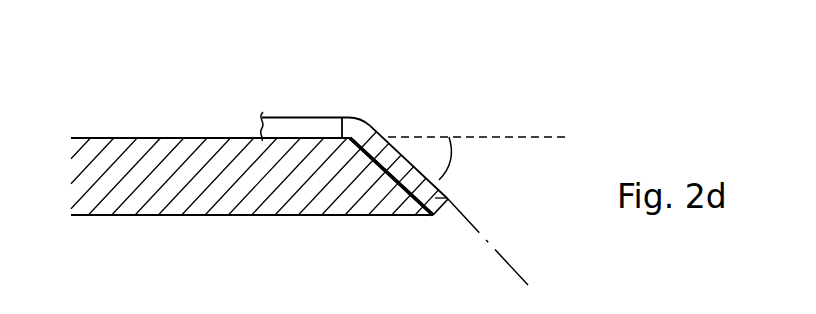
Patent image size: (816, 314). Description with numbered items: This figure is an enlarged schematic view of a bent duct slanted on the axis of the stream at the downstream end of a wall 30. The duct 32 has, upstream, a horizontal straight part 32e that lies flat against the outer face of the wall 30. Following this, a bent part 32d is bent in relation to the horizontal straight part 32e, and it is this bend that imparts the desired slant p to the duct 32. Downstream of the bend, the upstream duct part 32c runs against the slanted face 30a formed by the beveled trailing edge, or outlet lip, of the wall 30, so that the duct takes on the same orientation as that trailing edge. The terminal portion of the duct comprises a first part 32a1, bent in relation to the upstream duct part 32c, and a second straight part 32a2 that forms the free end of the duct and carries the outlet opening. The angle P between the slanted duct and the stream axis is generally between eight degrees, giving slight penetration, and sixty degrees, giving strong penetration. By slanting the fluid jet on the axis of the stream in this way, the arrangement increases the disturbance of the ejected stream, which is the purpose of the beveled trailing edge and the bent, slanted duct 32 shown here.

The wall 30 is at (177, 138).
The inclined side face of substrate 30a is at (406, 206).
The duct 32 is at (400, 168).
The horizontal straight part 32e is at (308, 128).
The bent part 32d is at (368, 122).
The upstream duct part 32c is at (388, 153).
The first part 32a1 is at (404, 176).
The second straight part 32a2 is at (448, 198).
The angle P is at (476, 158).